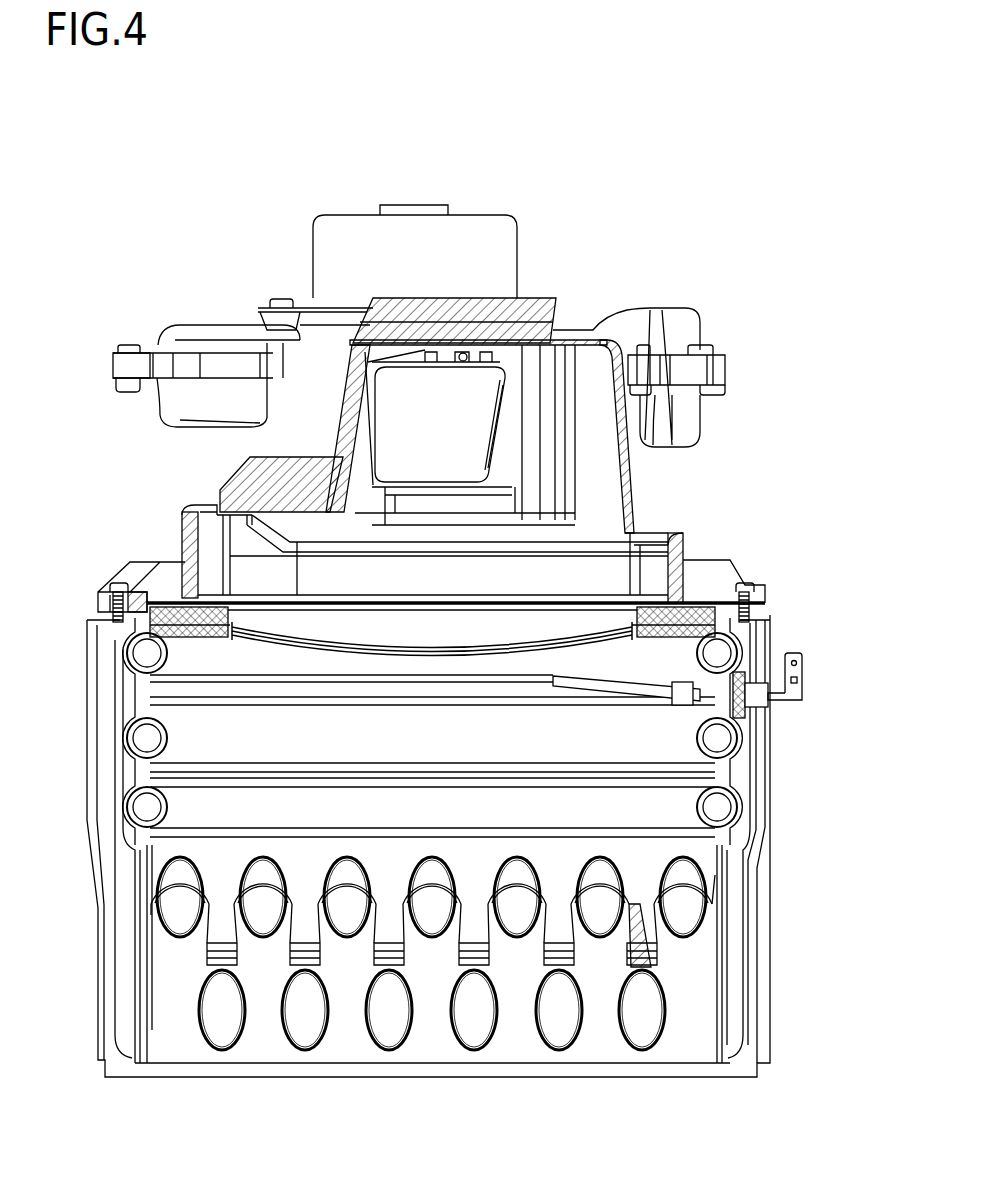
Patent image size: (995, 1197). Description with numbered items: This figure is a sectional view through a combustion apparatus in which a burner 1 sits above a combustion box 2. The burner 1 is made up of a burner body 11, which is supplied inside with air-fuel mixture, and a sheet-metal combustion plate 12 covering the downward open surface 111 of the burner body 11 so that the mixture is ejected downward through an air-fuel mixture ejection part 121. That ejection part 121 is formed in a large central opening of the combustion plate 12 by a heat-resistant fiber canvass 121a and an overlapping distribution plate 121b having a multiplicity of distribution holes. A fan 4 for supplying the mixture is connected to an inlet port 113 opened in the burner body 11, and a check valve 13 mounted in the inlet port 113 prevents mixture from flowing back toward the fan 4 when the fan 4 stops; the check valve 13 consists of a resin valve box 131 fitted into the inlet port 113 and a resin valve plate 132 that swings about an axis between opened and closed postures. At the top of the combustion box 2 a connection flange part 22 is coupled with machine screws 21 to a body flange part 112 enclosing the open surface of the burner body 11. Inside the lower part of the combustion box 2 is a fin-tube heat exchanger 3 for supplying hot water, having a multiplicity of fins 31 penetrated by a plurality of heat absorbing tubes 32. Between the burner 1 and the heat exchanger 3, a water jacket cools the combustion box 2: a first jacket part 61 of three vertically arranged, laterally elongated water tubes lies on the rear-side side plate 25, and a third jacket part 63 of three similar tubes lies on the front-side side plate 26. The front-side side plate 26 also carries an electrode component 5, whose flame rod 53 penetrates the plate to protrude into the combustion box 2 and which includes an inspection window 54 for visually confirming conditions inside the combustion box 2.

The burner 1 is at (660, 493).
The combustion box 2 is at (445, 846).
The heat exchanger 3 is at (433, 920).
The fan 4 is at (600, 315).
The electrode component 5 is at (762, 714).
The burner body 11 is at (643, 522).
The combustion plate 12 is at (627, 638).
The check valve 13 is at (392, 453).
The machine screws 21 is at (118, 584).
The connection flange part 22 is at (133, 620).
The rear-side side plate 25 is at (145, 860).
The front-side side plate 26 is at (765, 830).
The fins 31 is at (537, 870).
The heat absorbing tubes 32 is at (275, 872).
The flame rod 53 is at (608, 690).
The inspection window 54 is at (752, 697).
The first jacket part 61 is at (167, 788).
The third jacket part 63 is at (697, 810).
The open surface 111 is at (400, 605).
The body flange part 112 is at (720, 585).
The inlet port 113 is at (505, 440).
The air-fuel mixture ejection part 121 is at (305, 745).
The canvass 121a is at (325, 648).
The distribution plate 121b is at (417, 640).
The valve box 131 is at (498, 473).
The valve plate 132 is at (455, 470).